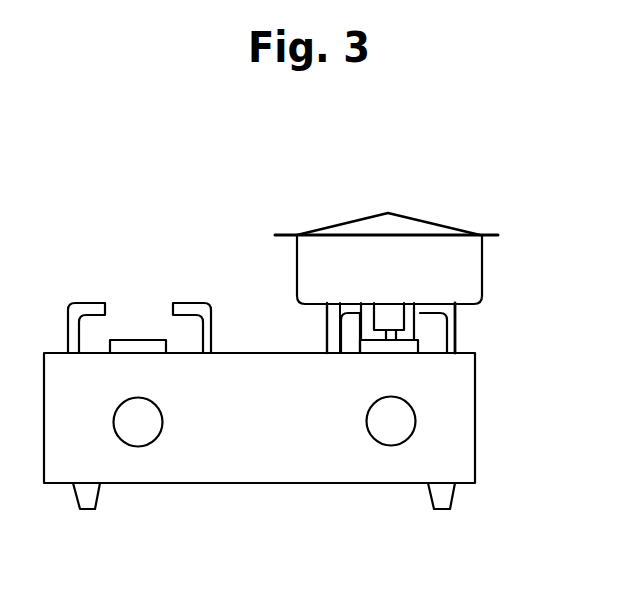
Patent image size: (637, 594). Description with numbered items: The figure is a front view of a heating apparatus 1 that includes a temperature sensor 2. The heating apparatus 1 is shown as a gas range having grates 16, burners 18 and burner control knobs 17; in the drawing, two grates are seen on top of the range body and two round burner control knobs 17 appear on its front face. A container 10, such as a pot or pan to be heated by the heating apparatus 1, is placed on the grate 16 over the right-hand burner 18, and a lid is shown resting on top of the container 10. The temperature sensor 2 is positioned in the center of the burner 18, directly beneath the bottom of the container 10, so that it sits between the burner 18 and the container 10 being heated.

The heating apparatus 1 is at (288, 450).
The temperature sensor 2 is at (390, 318).
The container 10 is at (447, 260).
The grate 16 is at (336, 326).
The burner control knob 17 is at (403, 419).
The burner 18 is at (417, 345).